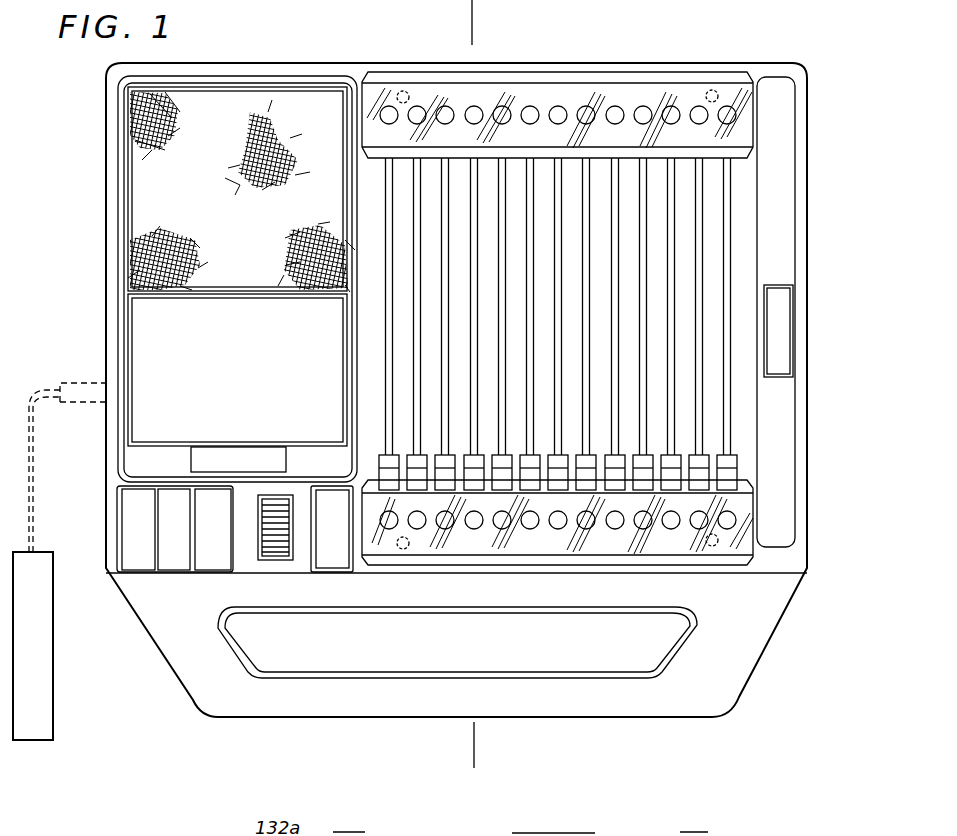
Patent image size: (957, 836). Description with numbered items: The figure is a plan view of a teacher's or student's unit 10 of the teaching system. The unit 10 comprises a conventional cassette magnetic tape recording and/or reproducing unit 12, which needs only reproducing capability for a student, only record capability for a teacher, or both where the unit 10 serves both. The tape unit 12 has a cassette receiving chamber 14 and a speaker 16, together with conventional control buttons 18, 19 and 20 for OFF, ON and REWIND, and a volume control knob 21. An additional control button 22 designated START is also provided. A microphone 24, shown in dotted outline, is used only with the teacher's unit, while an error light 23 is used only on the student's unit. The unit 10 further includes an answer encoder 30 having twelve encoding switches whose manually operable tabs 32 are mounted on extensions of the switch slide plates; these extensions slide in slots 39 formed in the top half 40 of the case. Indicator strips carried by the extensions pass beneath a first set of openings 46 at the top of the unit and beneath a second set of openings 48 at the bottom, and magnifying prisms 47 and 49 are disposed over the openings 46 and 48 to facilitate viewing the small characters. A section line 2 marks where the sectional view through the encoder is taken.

The section line 2- 2 is at (477, 24).
The teacher's or student's unit 10 is at (98, 152).
The cassette magnetic tape recording and/or reproducing unit 12 is at (124, 272).
The cassette receiving chamber 14 is at (247, 392).
The speaker 16 is at (247, 224).
The control button 18 is at (180, 558).
The control button 19 is at (212, 558).
The control button 20 is at (140, 558).
The volume control knob 21 is at (275, 547).
The control button 22 is at (323, 558).
The error light 23 is at (788, 336).
The microphone 24 is at (50, 707).
The answer encoder 30 is at (745, 193).
The manually operable tabs 32 is at (747, 438).
The slots 39 is at (586, 203).
The top half of the case 40 is at (748, 247).
The first set of openings 46 is at (442, 110).
The magnifying prism 47 is at (562, 78).
The second set of openings 48 is at (469, 525).
The magnifying prism 49 is at (748, 500).